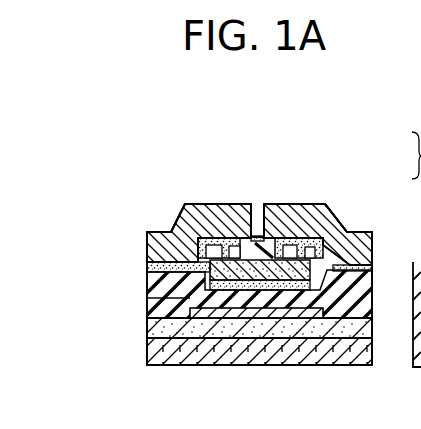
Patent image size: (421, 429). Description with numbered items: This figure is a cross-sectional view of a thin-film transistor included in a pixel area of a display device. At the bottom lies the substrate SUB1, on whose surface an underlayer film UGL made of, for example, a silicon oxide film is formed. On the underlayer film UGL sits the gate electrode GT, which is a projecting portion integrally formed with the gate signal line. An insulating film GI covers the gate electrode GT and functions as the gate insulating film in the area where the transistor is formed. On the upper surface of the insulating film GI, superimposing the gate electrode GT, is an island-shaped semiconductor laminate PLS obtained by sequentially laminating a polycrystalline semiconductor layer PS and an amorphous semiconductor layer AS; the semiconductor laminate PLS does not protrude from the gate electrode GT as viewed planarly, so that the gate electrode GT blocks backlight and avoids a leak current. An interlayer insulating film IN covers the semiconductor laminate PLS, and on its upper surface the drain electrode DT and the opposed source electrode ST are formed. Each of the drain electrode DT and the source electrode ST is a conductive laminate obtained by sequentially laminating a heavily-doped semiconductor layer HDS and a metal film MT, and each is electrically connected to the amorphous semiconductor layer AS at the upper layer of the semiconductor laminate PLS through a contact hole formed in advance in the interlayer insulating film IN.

The substrate SUB1 is at (147, 350).
The underlayer film UGL is at (147, 328).
The gate electrode GT is at (242, 312).
The insulating film GI is at (147, 303).
The interlayer insulating film IN is at (147, 277).
The drain electrode DT is at (217, 208).
The source electrode ST is at (335, 206).
The metal film MT is at (302, 213).
The heavily-doped semiconductor layer HDS is at (312, 230).
The semiconductor laminate PLS is at (192, 248).
The amorphous semiconductor layer AS is at (200, 250).
The polycrystalline semiconductor layer PS is at (168, 266).